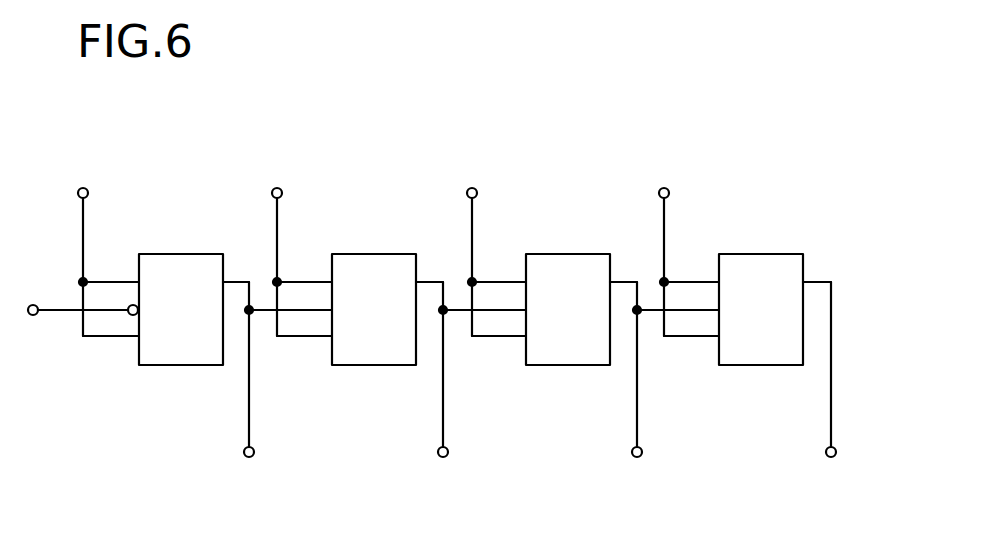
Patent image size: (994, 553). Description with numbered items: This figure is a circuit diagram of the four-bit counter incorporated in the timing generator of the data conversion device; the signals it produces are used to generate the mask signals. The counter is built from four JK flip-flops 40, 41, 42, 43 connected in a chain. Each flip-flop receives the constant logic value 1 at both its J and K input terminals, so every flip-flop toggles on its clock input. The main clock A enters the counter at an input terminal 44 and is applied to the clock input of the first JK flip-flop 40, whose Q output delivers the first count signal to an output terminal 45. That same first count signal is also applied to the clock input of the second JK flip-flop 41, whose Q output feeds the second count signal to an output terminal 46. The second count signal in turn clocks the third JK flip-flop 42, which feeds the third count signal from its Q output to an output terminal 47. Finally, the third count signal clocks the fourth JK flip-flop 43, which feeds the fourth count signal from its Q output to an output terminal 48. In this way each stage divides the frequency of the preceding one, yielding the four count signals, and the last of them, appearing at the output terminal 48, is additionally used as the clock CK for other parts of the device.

The logic value one input 1 is at (373, 248).
The JK flip-flop 40 is at (175, 254).
The JK flip-flop 41 is at (368, 254).
The JK flip-flop 42 is at (566, 254).
The JK flip-flop 43 is at (755, 254).
The input terminal 44 is at (33, 315).
The output terminal 45 is at (254, 452).
The output terminal 46 is at (448, 452).
The output terminal 47 is at (642, 452).
The output terminal 48 is at (836, 452).